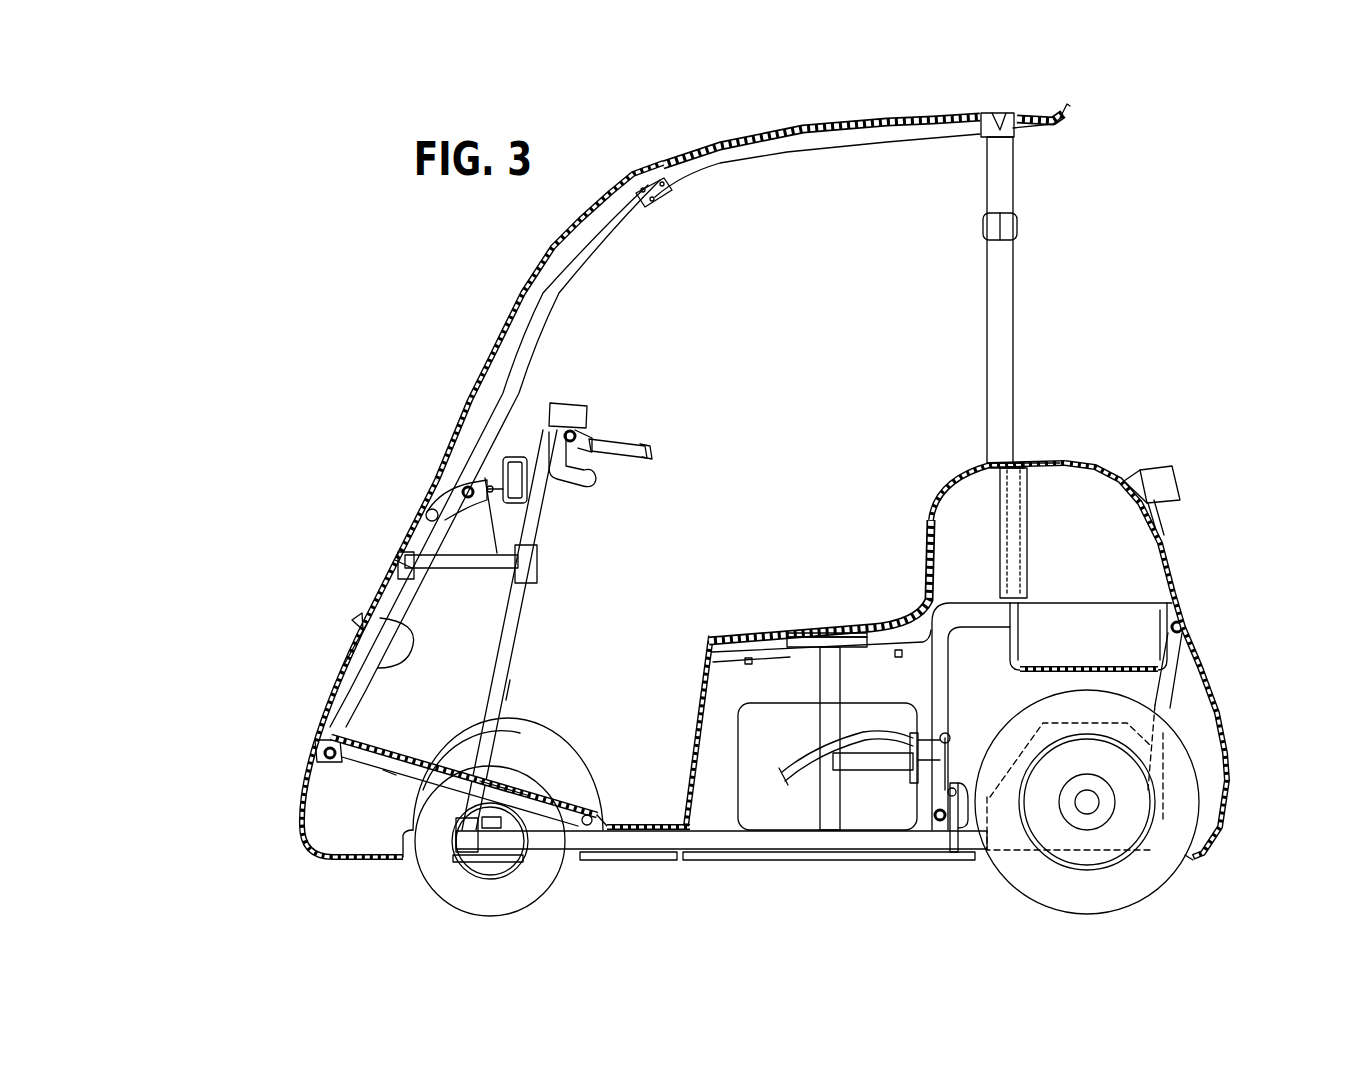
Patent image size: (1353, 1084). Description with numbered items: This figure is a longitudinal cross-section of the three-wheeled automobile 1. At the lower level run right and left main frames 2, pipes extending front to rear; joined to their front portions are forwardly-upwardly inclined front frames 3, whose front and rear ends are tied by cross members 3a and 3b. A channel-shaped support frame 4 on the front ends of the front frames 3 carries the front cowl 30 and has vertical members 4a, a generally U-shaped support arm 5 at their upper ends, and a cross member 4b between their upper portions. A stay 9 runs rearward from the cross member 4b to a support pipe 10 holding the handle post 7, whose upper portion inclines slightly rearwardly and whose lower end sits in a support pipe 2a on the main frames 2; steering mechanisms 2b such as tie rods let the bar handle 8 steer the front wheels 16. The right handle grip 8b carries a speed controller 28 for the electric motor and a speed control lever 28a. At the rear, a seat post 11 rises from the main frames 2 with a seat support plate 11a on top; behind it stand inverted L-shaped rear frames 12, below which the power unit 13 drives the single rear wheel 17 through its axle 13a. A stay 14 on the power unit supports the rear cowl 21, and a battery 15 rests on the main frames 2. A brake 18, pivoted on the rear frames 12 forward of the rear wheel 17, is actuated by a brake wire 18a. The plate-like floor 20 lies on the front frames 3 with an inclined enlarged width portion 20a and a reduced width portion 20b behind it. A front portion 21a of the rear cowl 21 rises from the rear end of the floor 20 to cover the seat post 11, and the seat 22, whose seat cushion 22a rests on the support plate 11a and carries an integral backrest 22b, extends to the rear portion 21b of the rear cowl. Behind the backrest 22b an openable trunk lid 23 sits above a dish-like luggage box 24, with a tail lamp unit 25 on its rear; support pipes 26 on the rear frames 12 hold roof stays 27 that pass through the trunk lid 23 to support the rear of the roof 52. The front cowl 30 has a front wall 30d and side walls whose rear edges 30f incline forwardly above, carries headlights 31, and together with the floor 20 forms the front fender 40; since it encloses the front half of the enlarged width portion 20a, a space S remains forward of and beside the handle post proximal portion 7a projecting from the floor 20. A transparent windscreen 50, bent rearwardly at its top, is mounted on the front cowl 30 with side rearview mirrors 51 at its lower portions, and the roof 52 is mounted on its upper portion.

The three-wheeled automobile 1 is at (1120, 207).
The main frames 2 is at (648, 850).
The support pipe 2a is at (460, 835).
The steering mechanisms 2b is at (491, 872).
The front frames 3 is at (384, 774).
The cross member 3a is at (318, 752).
The cross member 3b is at (606, 832).
The support frame 4 is at (363, 667).
The vertical members 4a is at (387, 568).
The cross member 4b is at (413, 567).
The support arm 5 is at (457, 478).
The handle post 7 is at (516, 623).
The handle post proximal portion 7a is at (388, 778).
The bar handle 8 is at (590, 430).
The right handle grip 8b is at (610, 441).
The stay 9 is at (447, 560).
The support pipe 10 is at (545, 562).
The seat post 11 is at (840, 690).
The seat support plate 11a is at (805, 645).
The rear frames 12 is at (945, 700).
The power unit 13 is at (1020, 850).
The axle 13a is at (1089, 810).
The stay 14 is at (1172, 702).
The battery 15 is at (790, 810).
The front wheels 16 is at (457, 897).
The rear wheel 17 is at (1140, 870).
The brake 18 is at (960, 825).
The brake wire 18a is at (845, 741).
The floor 20 is at (510, 778).
The enlarged width portion 20a is at (423, 760).
The reduced width portion 20b is at (641, 823).
The rear cowl 21 is at (1220, 657).
The front portion 21a is at (692, 690).
The rear portion 21b is at (1183, 612).
The seat 22 is at (868, 618).
The seat cushion 22a is at (790, 633).
The backrest 22b is at (934, 518).
The trunk lid 23 is at (1043, 462).
The luggage box 24 is at (1063, 667).
The tail lamp unit 25 is at (1180, 478).
The support pipes 26 is at (1028, 556).
The roof stays 27 is at (1012, 312).
The speed controller 28 is at (570, 405).
The speed control lever 28a is at (597, 490).
The front cowl 30 is at (385, 568).
The front wall 30d is at (353, 643).
The rear edges 30f is at (514, 688).
The headlights 31 is at (355, 620).
The front fender 40 is at (594, 756).
The windscreen 50 is at (503, 297).
The side rearview mirrors 51 is at (523, 480).
The roof 52 is at (795, 130).
The space S is at (388, 685).